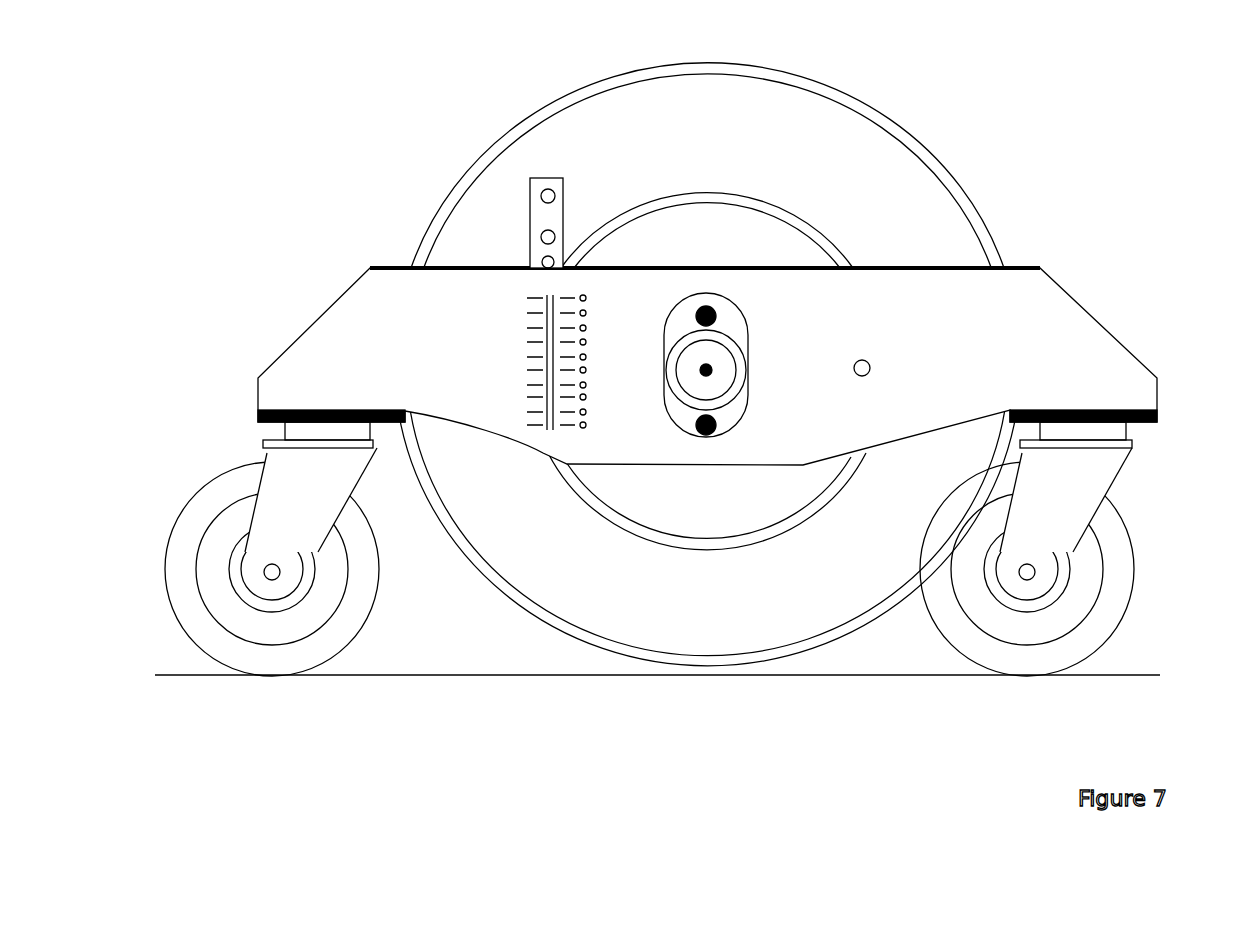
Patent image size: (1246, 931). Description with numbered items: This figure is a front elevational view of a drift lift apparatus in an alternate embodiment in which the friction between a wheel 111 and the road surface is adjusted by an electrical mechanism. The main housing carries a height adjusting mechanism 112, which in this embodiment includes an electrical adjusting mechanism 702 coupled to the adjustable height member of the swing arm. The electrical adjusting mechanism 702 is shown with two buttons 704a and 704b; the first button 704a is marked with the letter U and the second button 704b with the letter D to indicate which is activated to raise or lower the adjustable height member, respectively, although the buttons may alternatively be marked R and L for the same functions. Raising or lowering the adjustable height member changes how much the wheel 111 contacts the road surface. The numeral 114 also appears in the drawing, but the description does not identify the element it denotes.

The wheel 111 is at (738, 627).
The height adjusting mechanism 112 is at (1078, 384).
The caster wheel 114 is at (1112, 601).
The electrical adjusting mechanism 702 is at (533, 213).
The button 704a is at (560, 194).
The button 704b is at (562, 236).